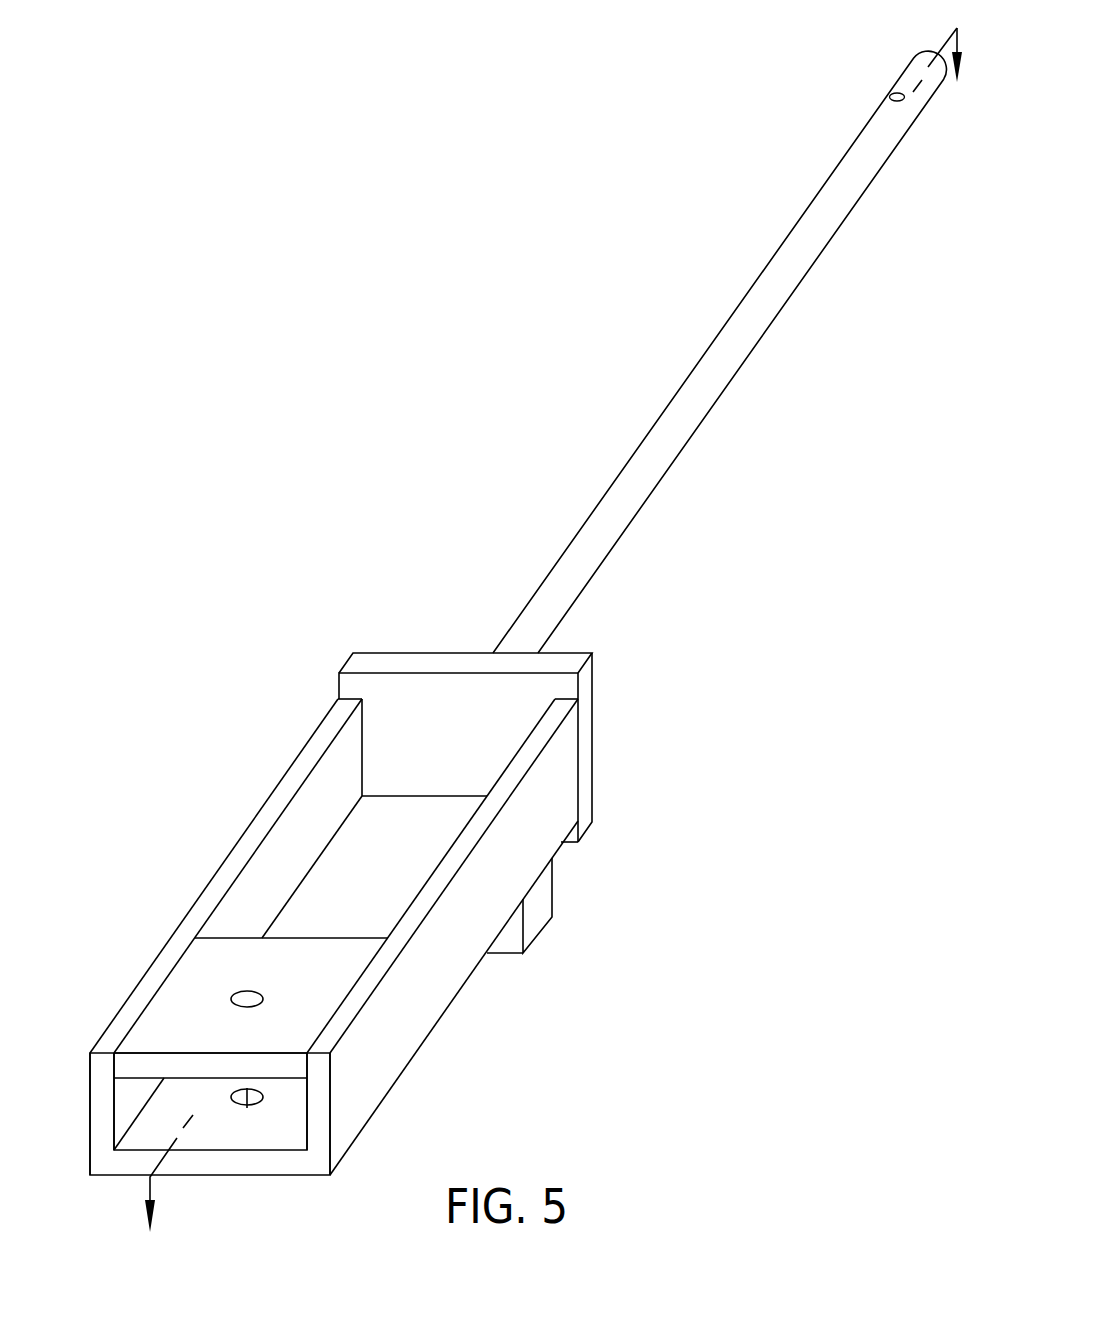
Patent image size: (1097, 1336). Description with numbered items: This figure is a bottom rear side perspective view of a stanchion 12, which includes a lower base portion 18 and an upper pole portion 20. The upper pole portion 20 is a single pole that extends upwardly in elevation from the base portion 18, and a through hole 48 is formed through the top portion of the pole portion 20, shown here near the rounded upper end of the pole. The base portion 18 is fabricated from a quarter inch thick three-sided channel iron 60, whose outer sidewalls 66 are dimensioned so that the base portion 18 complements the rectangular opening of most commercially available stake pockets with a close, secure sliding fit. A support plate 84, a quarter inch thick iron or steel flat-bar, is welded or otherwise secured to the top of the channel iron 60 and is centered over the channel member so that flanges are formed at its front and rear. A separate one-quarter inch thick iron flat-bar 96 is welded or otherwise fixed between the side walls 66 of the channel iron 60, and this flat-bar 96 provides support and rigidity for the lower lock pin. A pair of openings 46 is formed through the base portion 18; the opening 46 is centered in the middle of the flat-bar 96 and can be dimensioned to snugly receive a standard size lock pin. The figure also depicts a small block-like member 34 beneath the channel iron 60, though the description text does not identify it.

The stanchion 12 is at (366, 552).
The lower base portion 18 is at (438, 1068).
The upper pole portion 20 is at (700, 380).
The mounting block 34 is at (538, 898).
The openings 46 is at (247, 997).
The through hole 48 is at (896, 92).
The three-sided channel iron 60 is at (353, 887).
The channel iron outer sidewalls 66 is at (100, 1122).
The support plate 84 is at (422, 732).
The flat-bar 96 is at (177, 1003).